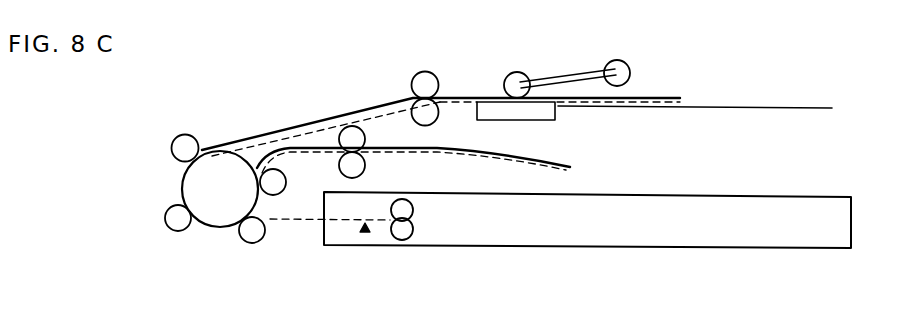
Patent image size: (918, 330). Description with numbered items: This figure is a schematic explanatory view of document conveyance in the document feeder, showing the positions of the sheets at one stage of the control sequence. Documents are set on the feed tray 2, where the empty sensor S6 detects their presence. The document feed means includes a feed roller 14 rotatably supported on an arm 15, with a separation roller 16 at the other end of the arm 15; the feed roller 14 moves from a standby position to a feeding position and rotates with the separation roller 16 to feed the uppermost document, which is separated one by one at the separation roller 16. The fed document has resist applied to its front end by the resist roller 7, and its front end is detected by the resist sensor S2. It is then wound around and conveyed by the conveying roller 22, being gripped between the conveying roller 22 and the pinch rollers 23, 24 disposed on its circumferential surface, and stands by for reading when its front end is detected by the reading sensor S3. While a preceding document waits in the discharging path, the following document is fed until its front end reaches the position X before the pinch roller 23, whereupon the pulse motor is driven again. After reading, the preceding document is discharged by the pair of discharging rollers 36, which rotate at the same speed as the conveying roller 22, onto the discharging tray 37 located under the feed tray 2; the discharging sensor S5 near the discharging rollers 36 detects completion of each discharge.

The feed tray 2 is at (673, 109).
The resist roller 7 is at (412, 87).
The feed roller 14 is at (615, 61).
The arm 15 is at (538, 73).
The separation roller 16 is at (514, 73).
The conveying roller 22 is at (195, 182).
The pinch roller 23 is at (187, 134).
The pinch roller 24 is at (165, 227).
The discharging rollers 36 is at (365, 167).
The discharging tray 37 is at (700, 184).
The position X is at (209, 142).
The resist sensor S2 is at (452, 116).
The reading sensor S3 is at (216, 243).
The discharging sensor S5 is at (304, 150).
The empty sensor S6 is at (575, 122).